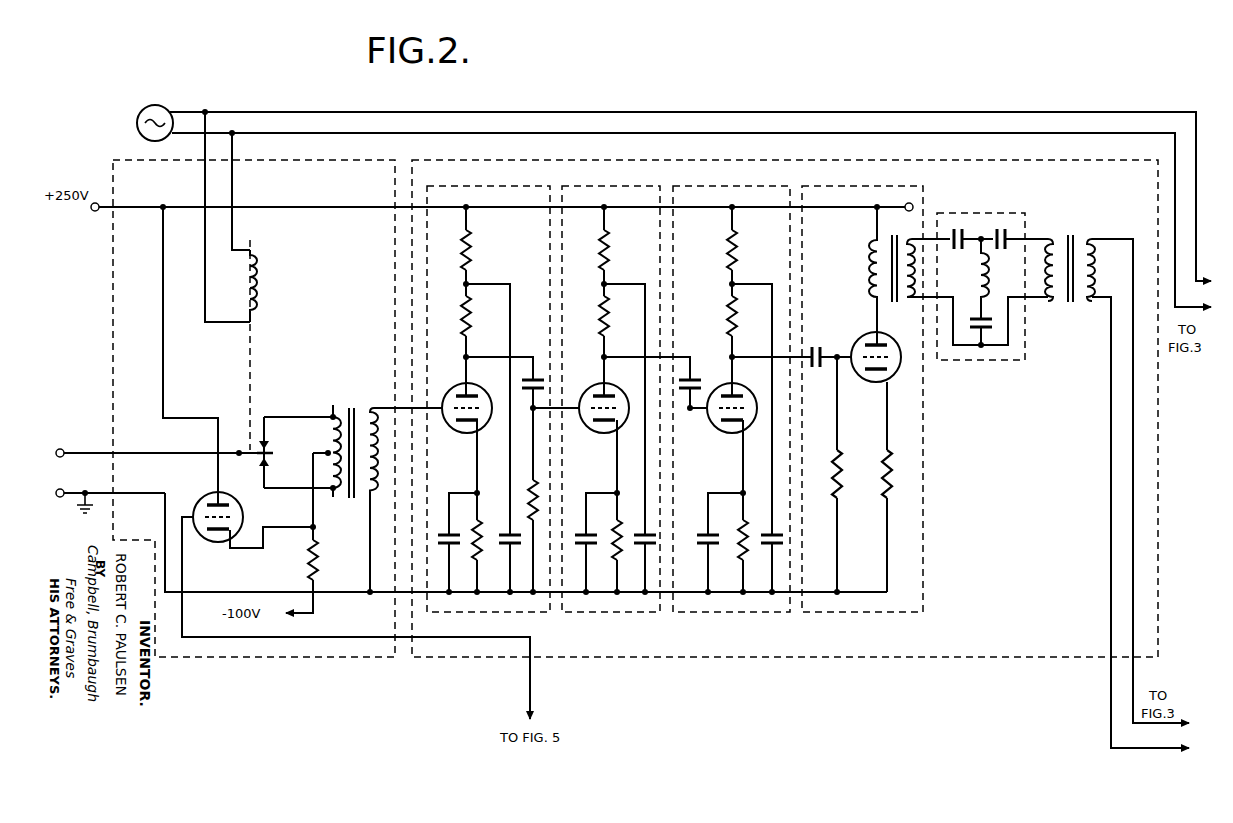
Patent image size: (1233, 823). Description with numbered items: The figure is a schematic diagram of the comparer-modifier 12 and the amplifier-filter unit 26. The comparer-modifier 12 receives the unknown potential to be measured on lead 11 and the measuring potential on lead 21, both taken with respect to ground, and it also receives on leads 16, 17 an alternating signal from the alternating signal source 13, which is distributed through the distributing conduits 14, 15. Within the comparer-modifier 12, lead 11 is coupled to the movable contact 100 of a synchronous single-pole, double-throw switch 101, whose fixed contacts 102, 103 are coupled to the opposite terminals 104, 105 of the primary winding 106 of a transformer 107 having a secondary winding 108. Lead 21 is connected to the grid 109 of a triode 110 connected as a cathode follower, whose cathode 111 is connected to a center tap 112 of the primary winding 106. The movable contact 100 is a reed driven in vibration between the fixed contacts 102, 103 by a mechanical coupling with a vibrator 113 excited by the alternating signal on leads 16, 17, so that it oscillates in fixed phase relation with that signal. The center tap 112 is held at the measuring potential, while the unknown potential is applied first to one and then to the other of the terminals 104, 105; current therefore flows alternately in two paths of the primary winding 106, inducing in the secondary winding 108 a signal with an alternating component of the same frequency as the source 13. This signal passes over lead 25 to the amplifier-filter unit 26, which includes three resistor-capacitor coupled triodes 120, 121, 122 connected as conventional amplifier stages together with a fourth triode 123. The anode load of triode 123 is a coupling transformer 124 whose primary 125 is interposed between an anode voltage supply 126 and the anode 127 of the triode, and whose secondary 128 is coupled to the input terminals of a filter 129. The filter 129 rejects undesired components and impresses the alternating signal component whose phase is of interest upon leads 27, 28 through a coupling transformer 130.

The lead 11 is at (85, 452).
The comparer-modifier 12 is at (112, 297).
The alternating signal source 13 is at (137, 116).
The distributing conduit 14 is at (292, 112).
The distributing conduit 15 is at (346, 134).
The lead 16 is at (204, 185).
The lead 17 is at (233, 185).
The lead 21 is at (533, 693).
The lead 25 is at (400, 408).
The amplifier-filter unit 26 is at (603, 161).
The lead 27 is at (1113, 238).
The lead 28 is at (1102, 301).
The movable contact 100 is at (263, 445).
The synchronous single-pole, double-throw switch 101 is at (270, 446).
The fixed contact 102 is at (261, 447).
The fixed contact 103 is at (266, 470).
The terminal 104 is at (325, 442).
The terminal 105 is at (332, 511).
The primary winding 106 is at (313, 465).
The transformer 107 is at (352, 405).
The secondary winding 108 is at (368, 497).
The grid 109 is at (207, 505).
The triode 110 is at (246, 510).
The cathode 111 is at (216, 532).
The center tap 112 is at (326, 450).
The vibrator 113 is at (258, 283).
The triode 120 is at (476, 391).
The triode 121 is at (613, 391).
The triode 122 is at (741, 391).
The triode 123 is at (857, 344).
The coupling transformer 124 is at (937, 276).
The primary 125 is at (866, 273).
The anode voltage supply 126 is at (877, 203).
The anode 127 is at (883, 344).
The secondary 128 is at (917, 273).
The filter 129 is at (986, 362).
The coupling transformer 130 is at (1065, 236).